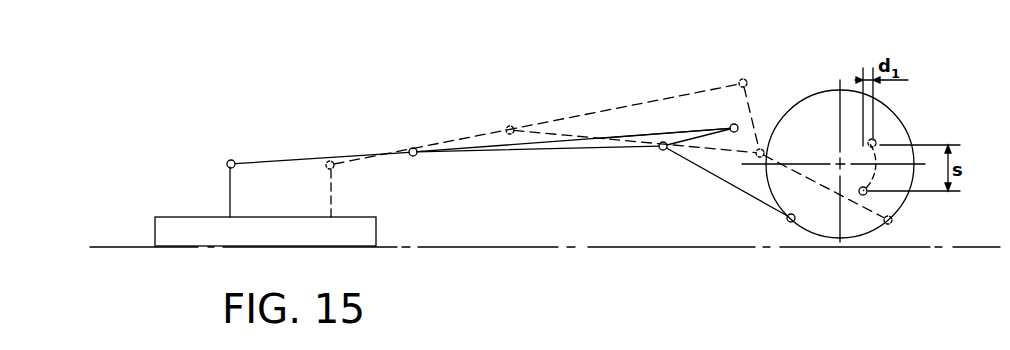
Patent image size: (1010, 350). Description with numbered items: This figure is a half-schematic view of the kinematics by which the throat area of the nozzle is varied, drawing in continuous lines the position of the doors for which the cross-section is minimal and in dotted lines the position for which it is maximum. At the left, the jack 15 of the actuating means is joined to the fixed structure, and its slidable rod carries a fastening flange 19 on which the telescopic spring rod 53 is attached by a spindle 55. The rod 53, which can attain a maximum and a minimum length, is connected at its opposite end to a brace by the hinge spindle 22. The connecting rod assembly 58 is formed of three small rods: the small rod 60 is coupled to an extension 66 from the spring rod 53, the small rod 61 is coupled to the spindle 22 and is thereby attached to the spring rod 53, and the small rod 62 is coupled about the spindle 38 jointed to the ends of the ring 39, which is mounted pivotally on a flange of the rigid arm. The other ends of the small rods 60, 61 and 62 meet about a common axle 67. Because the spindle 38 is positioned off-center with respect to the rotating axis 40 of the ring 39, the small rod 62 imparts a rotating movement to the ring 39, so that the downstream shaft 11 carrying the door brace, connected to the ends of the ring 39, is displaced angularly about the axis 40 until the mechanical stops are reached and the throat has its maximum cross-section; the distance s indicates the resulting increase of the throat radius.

The downstream shaft 11 is at (866, 193).
The jack 15 is at (170, 223).
The fastening flanges 19 is at (230, 188).
The hinge spindle 22 is at (732, 125).
The spindle 38 is at (790, 222).
The ring 39 is at (825, 102).
The rotating axis 40 is at (838, 160).
The rod 53 is at (500, 145).
The spindle 55 is at (230, 160).
The connecting rod assembly 58 is at (557, 153).
The small rod 60 is at (582, 150).
The small rod 61 is at (680, 143).
The small rod 62 is at (730, 187).
The extension 66 is at (412, 148).
The common axle 67 is at (662, 148).